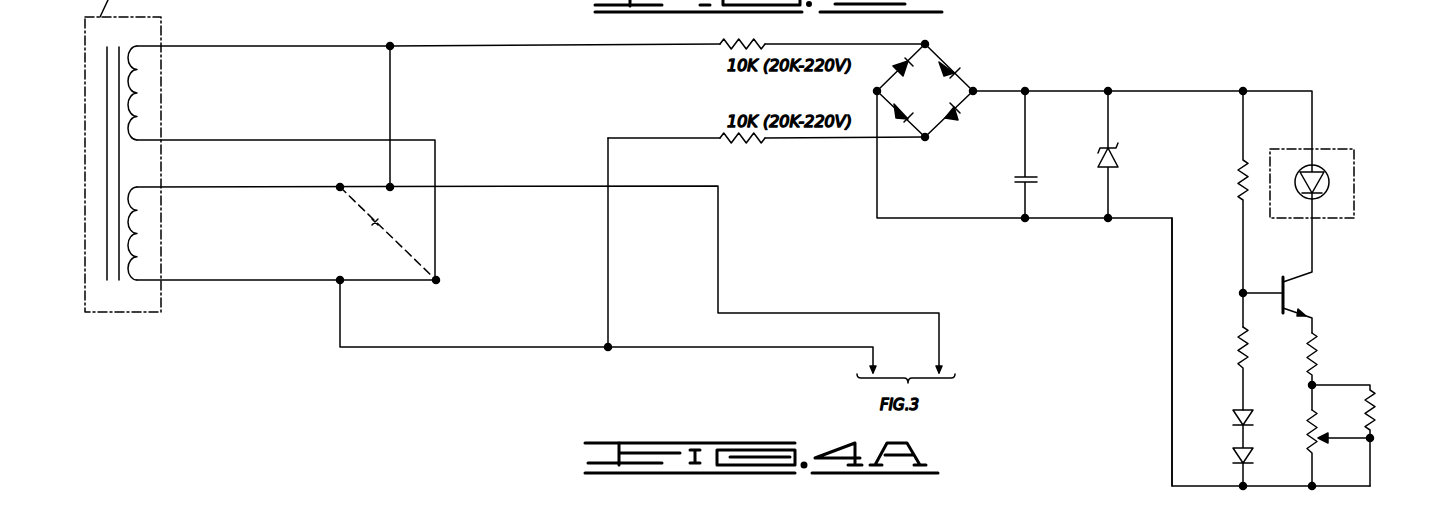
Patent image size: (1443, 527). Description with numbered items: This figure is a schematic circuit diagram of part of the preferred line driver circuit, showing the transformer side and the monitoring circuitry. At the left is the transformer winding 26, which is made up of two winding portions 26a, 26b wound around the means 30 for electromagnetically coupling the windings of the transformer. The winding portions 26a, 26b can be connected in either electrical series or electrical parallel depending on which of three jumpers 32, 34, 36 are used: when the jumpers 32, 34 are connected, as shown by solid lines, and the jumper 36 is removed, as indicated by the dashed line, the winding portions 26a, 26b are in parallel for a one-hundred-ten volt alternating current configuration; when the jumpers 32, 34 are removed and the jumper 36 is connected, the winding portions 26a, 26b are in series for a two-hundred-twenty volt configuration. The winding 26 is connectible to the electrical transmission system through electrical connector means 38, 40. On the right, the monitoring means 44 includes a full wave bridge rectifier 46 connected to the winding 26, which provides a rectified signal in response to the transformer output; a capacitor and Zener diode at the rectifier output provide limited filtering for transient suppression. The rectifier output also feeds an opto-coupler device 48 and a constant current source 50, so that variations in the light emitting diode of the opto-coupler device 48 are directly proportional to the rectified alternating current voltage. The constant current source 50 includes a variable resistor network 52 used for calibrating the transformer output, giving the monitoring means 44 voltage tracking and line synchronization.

The winding 26 is at (172, 145).
The winding portion 26a is at (136, 110).
The winding portion 26b is at (136, 240).
The means for electromagnetically coupling the windings 30 is at (115, 283).
The jumper 32 is at (362, 186).
The jumper 34 is at (386, 280).
The jumper 36 is at (370, 225).
The electrical connector means 38 is at (671, 346).
The electrical connector means 40 is at (759, 314).
The monitoring means 44 is at (1144, 257).
The full wave bridge rectifier 46 is at (962, 61).
The opto-coupler device 48 is at (1332, 148).
The constant current source 50 is at (1162, 424).
The variable resistor network 52 is at (1348, 382).